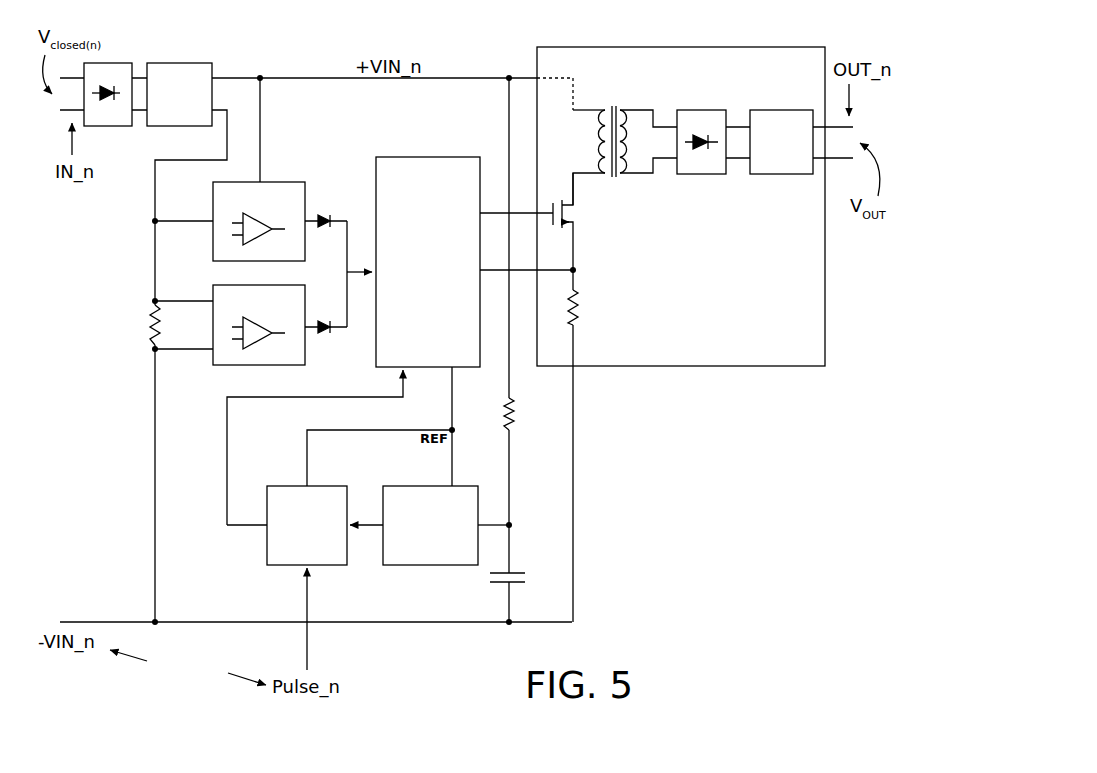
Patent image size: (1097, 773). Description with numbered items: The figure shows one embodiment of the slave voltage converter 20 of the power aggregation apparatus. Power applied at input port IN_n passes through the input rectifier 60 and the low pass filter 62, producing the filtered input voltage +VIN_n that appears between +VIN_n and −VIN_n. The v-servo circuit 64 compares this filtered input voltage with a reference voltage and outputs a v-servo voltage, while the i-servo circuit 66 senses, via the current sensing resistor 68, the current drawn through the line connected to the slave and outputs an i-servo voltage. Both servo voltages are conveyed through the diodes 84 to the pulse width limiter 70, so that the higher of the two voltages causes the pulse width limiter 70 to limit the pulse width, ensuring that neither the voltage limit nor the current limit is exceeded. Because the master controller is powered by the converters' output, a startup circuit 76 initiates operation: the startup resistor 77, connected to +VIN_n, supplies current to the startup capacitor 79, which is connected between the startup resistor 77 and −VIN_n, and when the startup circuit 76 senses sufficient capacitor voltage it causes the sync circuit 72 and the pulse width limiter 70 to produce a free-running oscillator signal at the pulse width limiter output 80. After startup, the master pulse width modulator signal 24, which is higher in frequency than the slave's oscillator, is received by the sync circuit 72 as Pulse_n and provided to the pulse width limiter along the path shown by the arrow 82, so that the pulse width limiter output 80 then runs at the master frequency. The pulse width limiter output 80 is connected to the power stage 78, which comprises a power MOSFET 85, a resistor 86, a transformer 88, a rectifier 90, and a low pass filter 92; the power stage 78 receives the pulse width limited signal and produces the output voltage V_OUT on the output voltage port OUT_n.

The slave voltage converter 20 is at (745, 610).
The master pulse width modulator signal 24 is at (166, 686).
The input rectifier 60 is at (113, 63).
The low pass filter 62 is at (175, 63).
The v-servo circuit 64 is at (270, 182).
The i-servo circuit 66 is at (220, 365).
The current sensing resistor 68 is at (152, 333).
The pulse width limiter 70 is at (398, 157).
The sync circuit 72 is at (267, 548).
The startup circuit 76 is at (425, 565).
The startup resistor 77 is at (515, 425).
The power stage 78 is at (586, 47).
The startup capacitor 79 is at (519, 573).
The pulse width limiter output 80 is at (499, 206).
The arrow showing master signal path 82 is at (227, 460).
The diodes 84 is at (328, 207).
The power MOSFET 85 is at (581, 214).
The resistor 86 is at (579, 314).
The transformer 88 is at (607, 175).
The rectifier 90 is at (690, 174).
The low pass filter 92 is at (763, 174).